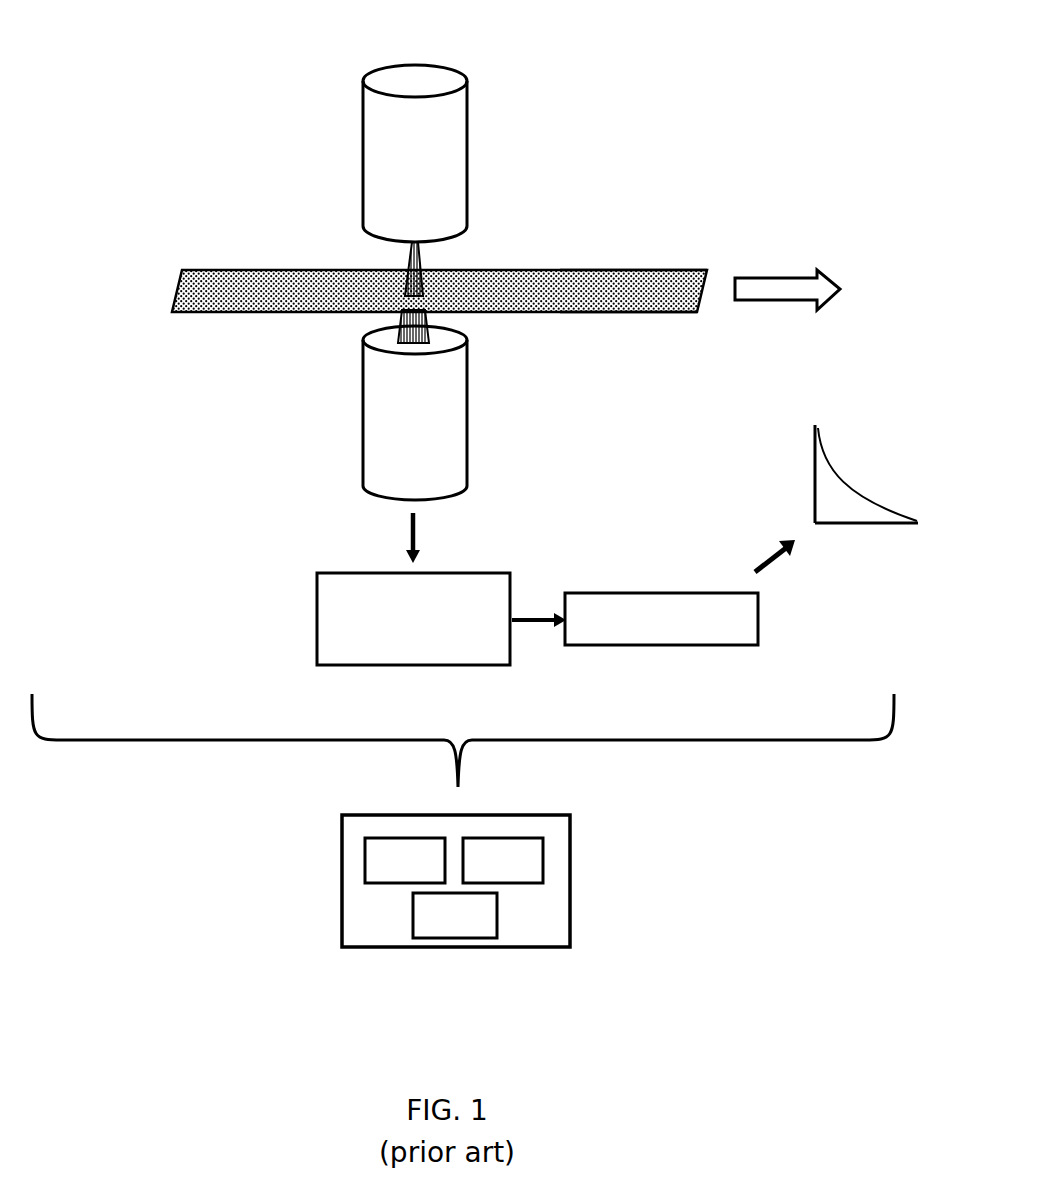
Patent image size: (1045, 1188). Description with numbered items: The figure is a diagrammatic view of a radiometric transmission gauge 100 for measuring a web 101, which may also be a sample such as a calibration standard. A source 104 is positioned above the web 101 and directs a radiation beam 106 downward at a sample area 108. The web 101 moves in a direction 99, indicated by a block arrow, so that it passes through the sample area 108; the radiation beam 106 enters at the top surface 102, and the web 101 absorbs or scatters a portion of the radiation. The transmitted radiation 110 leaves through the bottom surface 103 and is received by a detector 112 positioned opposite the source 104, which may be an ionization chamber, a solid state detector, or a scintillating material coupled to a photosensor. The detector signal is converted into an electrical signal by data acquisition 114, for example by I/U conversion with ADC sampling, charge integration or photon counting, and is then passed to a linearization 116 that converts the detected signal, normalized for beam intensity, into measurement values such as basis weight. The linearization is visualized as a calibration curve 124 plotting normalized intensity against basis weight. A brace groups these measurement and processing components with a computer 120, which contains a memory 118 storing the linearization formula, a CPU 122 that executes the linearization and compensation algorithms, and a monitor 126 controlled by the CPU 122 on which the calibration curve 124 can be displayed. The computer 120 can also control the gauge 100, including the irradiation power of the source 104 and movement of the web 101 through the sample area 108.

The direction 99 is at (793, 275).
The radiometric transmission gauge 100 is at (170, 79).
The web 101 is at (177, 288).
The top surface 102 is at (632, 250).
The bottom surface 103 is at (641, 345).
The source 104 is at (363, 153).
The radiation beam 106 is at (410, 268).
The sample area 108 is at (450, 265).
The transmitted radiation 110 is at (402, 313).
The detector 112 is at (363, 483).
The data acquisition 114 is at (317, 615).
The linearization 116 is at (639, 592).
The memory 118 is at (405, 860).
The computer 120 is at (342, 895).
The CPU 122 is at (503, 860).
The calibration curve 124 is at (858, 465).
The monitor 126 is at (455, 915).